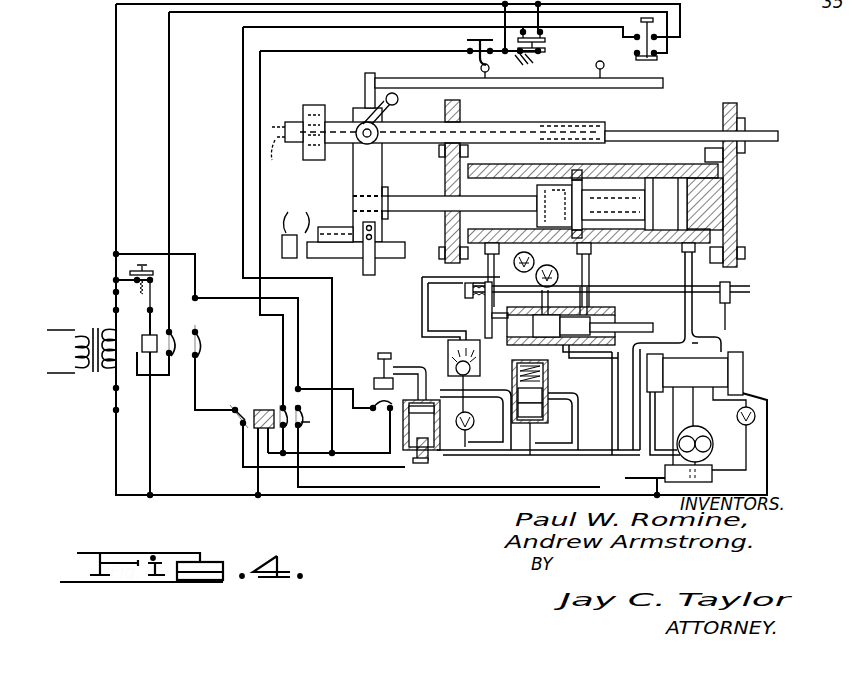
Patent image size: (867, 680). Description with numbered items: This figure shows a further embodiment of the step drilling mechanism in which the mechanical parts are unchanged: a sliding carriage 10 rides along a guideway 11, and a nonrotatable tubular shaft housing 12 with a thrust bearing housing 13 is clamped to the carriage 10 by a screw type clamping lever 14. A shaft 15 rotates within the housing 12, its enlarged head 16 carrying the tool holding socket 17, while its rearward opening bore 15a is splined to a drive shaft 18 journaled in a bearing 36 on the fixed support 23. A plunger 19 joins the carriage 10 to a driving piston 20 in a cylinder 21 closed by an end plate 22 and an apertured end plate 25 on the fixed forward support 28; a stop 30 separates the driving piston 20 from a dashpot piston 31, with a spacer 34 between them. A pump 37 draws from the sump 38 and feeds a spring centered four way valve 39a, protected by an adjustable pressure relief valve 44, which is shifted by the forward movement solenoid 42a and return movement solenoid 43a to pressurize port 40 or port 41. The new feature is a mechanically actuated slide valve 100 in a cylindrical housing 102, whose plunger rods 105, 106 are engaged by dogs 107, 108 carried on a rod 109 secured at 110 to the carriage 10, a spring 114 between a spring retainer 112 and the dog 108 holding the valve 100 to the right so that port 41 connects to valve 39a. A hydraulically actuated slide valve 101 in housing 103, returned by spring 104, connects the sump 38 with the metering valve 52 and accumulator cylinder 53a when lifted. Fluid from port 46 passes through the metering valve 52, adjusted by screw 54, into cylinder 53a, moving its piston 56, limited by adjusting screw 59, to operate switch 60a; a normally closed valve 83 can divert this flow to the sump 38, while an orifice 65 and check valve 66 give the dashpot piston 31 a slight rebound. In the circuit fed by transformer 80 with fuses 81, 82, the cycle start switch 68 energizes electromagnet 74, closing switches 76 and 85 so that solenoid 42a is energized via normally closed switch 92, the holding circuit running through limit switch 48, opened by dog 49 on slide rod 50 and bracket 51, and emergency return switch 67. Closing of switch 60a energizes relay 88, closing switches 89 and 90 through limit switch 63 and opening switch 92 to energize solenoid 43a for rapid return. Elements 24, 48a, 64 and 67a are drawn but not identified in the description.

The sliding carriage 10 is at (375, 176).
The guideway 11 is at (297, 233).
The tubular shaft housing 12 is at (493, 123).
The thrust bearing housing 13 is at (313, 106).
The screw type clamping lever 14 is at (386, 123).
The shaft 15 is at (444, 110).
The rearward opening bore 15a is at (552, 124).
The enlarged head 16 is at (288, 122).
The tool holding socket 17 is at (281, 152).
The drive shaft 18 is at (650, 125).
The plunger 19 is at (430, 190).
The driving piston 20 is at (672, 211).
The cylinder 21 is at (640, 170).
The end plate 22 is at (715, 215).
The fixed support 23 is at (740, 192).
The rods 24 is at (563, 301).
The apertured end plate 25 is at (542, 203).
The fixed forward support 28 is at (445, 164).
The stop 30 is at (582, 172).
The dashpot piston 31 is at (575, 182).
The spacer 34 is at (610, 196).
The bearing 36 is at (746, 125).
The pump 37 is at (712, 444).
The sump 38 is at (656, 477).
The spring centered four way valve 39a is at (712, 384).
The port 40 is at (677, 259).
The port 41 is at (612, 275).
The forward movement solenoid 42a is at (648, 372).
The return movement solenoid 43a is at (745, 370).
The adjustable pressure relief valve 44 is at (757, 418).
The port 46 is at (445, 214).
The limit switch 48 is at (533, 60).
The relay contact 48a is at (548, 39).
The dog 49 is at (605, 68).
The slide rod 50 is at (402, 80).
The bracket 51 is at (365, 80).
The adjustable metering and check valve 52 is at (447, 347).
The accumulator cylinder 53a is at (404, 432).
The adjustment screw 54 is at (470, 368).
The piston 56 is at (403, 400).
The adjusting screw 59 is at (414, 460).
The switch 60a is at (372, 378).
The limit switch 63 is at (465, 41).
The pivot 64 is at (480, 68).
The high resistance orifice 65 is at (560, 258).
The check valve 66 is at (556, 261).
The emergency return switch 67 is at (660, 60).
The relay contact 67a is at (658, 23).
The cycle start switch 68 is at (143, 264).
The electromagnet 74 is at (140, 355).
The normally open switch 76 is at (168, 371).
The transformer 80 is at (100, 330).
The fuse 81 is at (113, 298).
The fuse 82 is at (113, 410).
The normally closed valve 83 is at (475, 421).
The switch 85 is at (197, 344).
The relay 88 is at (238, 404).
The switch 89 is at (283, 404).
The switch 90 is at (310, 424).
The normally closed switch 92 is at (238, 417).
The slide valve 100 is at (592, 330).
The slide valve 101 is at (548, 405).
The cylindrical housing 102 is at (600, 318).
The cylindrical housing 103 is at (548, 384).
The spring 104 is at (548, 366).
The plunger rod 105 is at (672, 332).
The plunger rod 106 is at (495, 348).
The dog 107 is at (732, 318).
The dog 108 is at (485, 328).
The rod 109 is at (398, 263).
The rod attachment 110 is at (365, 248).
The spring retainer 112 is at (457, 282).
The spring 114 is at (458, 300).